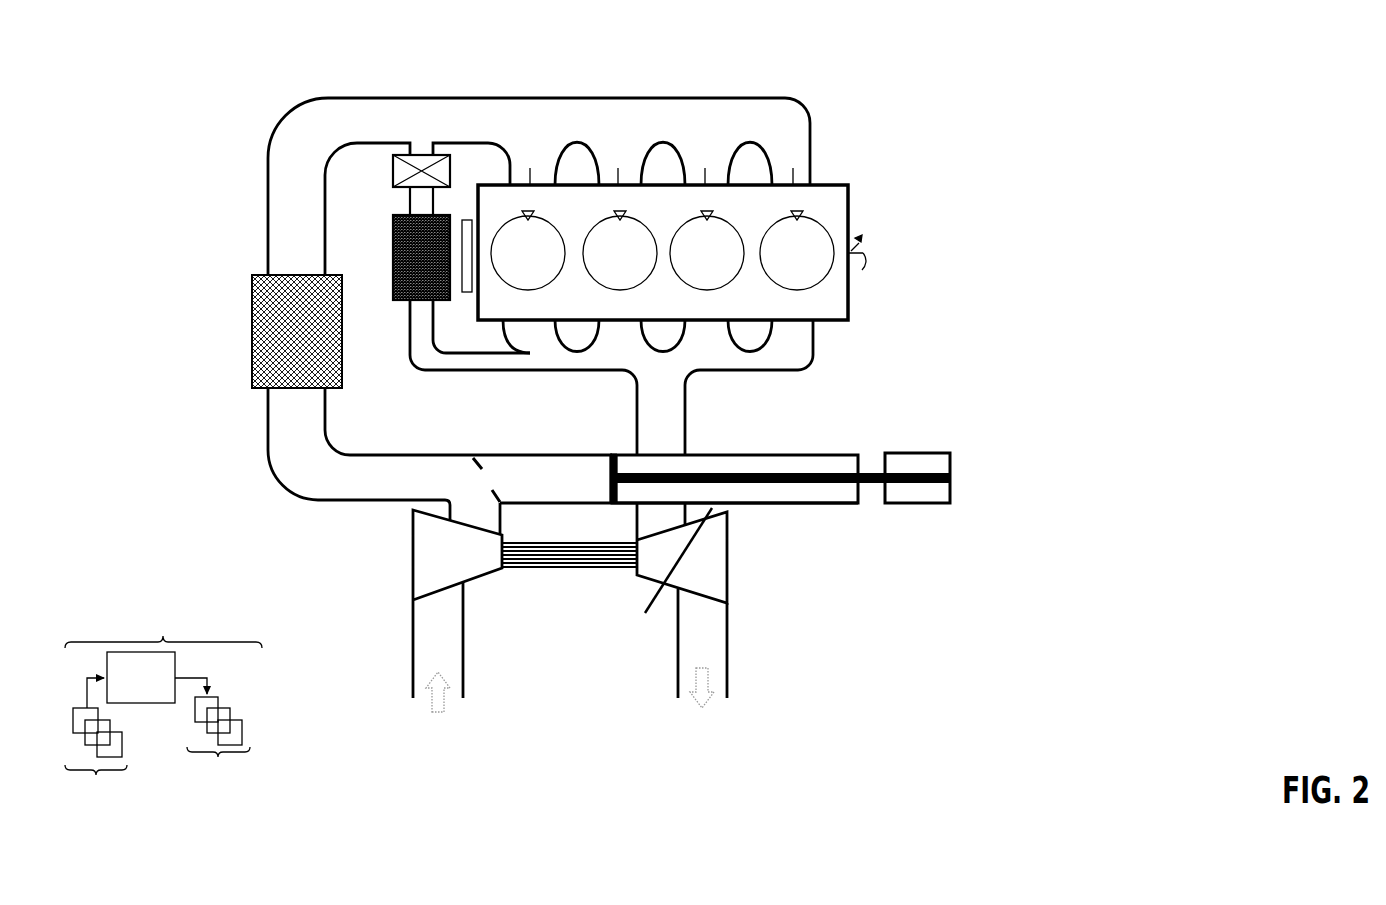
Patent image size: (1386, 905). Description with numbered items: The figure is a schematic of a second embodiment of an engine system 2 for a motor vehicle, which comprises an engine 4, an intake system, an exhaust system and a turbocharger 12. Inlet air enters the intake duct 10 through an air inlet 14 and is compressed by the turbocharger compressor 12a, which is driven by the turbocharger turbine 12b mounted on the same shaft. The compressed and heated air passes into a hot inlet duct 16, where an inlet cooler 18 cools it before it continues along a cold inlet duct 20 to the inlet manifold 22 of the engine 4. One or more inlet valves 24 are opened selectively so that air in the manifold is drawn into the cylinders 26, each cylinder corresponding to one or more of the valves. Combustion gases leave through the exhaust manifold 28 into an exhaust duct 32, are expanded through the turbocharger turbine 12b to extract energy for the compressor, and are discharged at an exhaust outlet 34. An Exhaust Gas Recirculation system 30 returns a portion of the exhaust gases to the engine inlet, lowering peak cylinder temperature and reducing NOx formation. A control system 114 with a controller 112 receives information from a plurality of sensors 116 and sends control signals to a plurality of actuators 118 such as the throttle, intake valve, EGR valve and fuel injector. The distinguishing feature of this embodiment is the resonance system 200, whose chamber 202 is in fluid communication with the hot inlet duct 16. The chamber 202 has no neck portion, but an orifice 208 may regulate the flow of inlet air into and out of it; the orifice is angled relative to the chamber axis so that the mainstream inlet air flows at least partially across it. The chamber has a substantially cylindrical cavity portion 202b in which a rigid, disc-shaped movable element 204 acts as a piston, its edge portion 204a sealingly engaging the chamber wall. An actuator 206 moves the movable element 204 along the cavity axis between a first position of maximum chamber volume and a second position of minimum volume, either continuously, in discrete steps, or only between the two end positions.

The engine system 2 is at (241, 60).
The engine 4 is at (733, 60).
The intake duct 10 is at (412, 608).
The turbocharger 12 is at (544, 585).
The turbocharger compressor 12a is at (479, 583).
The turbocharger turbine 12b is at (648, 580).
The air inlet 14 is at (471, 662).
The hot inlet duct 16 is at (320, 501).
The inlet cooler 18 is at (252, 375).
The cold inlet duct 20 is at (356, 97).
The inlet manifold 22 is at (601, 97).
The inlet valves 24 is at (636, 165).
The cylinders 26 is at (585, 258).
The exhaust manifold 28 is at (818, 343).
The Exhaust Gas Recirculation (EGR) system 30 is at (507, 389).
The exhaust duct 32 is at (688, 432).
The exhaust outlet 34 is at (728, 667).
The controller 112 is at (141, 677).
The control system 114 is at (163, 696).
The sensors 116 is at (96, 745).
The actuators 118 is at (215, 745).
The resonance system 200 is at (857, 588).
The chamber 202 is at (819, 455).
The cavity portion 202b is at (752, 497).
The movable element 204 is at (609, 496).
The edge portion 204a is at (613, 453).
The actuator 206 is at (903, 462).
The orifice 208 is at (493, 481).